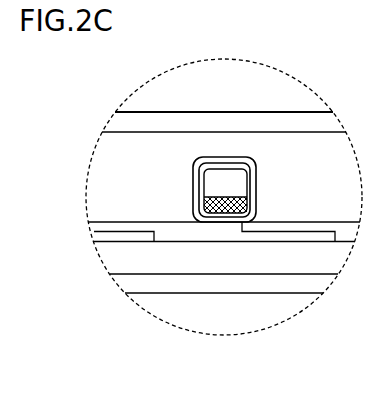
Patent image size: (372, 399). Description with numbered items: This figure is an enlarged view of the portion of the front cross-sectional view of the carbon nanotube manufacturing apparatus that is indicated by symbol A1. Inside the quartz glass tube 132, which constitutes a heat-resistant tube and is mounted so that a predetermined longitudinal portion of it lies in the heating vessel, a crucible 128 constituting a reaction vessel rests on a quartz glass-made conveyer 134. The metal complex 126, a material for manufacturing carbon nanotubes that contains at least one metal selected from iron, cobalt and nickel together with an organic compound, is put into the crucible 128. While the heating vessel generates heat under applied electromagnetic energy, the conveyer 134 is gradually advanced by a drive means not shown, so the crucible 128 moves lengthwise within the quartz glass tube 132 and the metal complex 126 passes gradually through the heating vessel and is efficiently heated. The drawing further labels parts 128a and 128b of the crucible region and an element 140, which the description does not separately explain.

The portion indicated by symbol A1 is at (224, 60).
The metal complex 126 is at (215, 197).
The crucible 128 is at (276, 190).
The first reflective layer 128a is at (249, 203).
The second reflective layer 128b is at (257, 181).
The quartz glass tube 132 is at (313, 112).
The conveyer 134 is at (213, 232).
The sealing member 140 is at (268, 153).